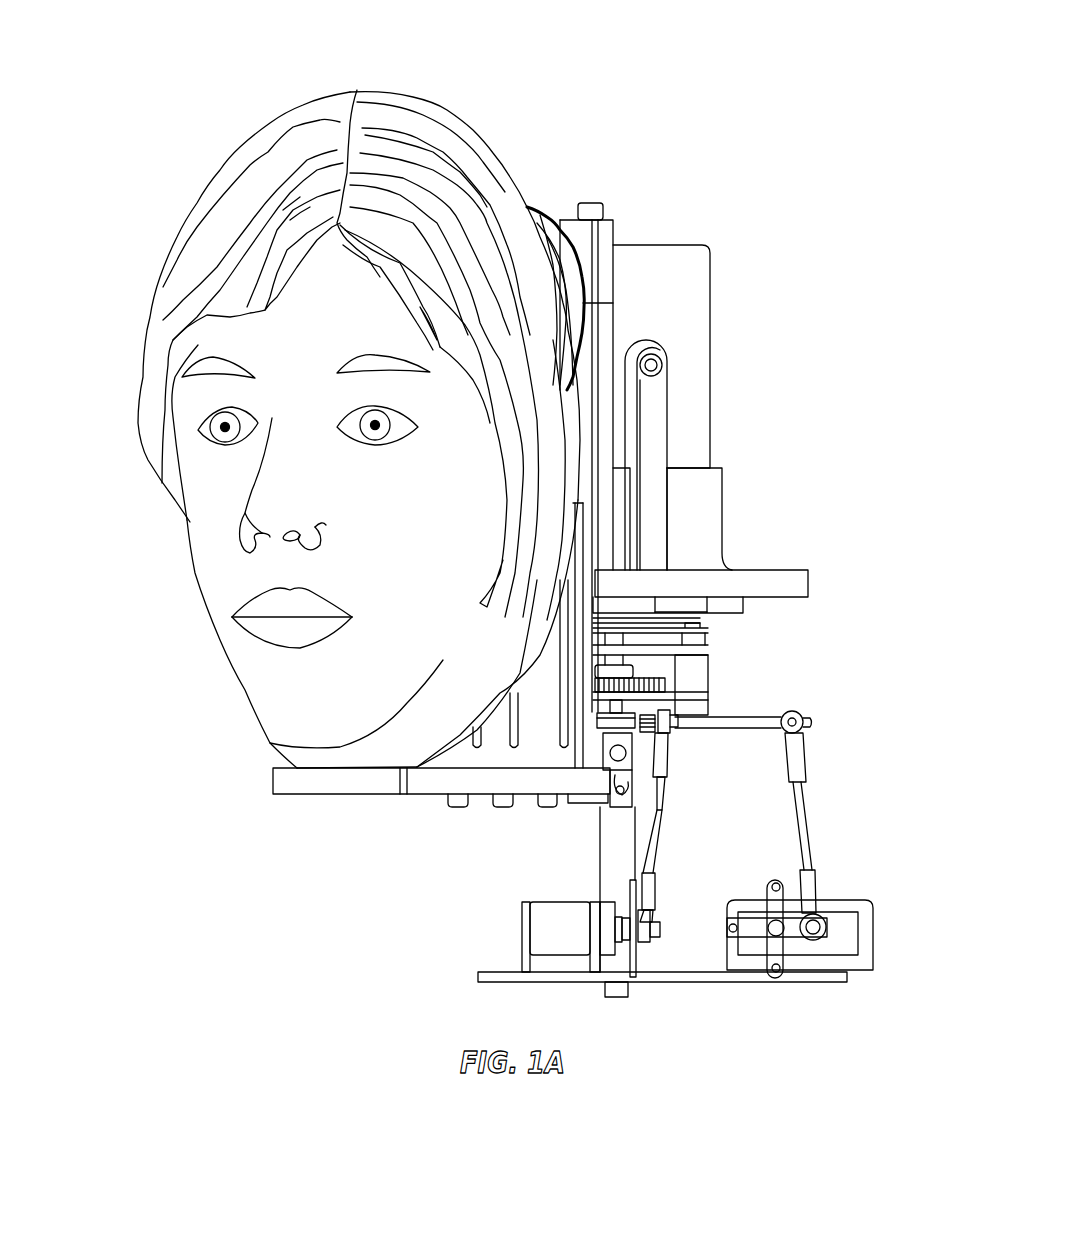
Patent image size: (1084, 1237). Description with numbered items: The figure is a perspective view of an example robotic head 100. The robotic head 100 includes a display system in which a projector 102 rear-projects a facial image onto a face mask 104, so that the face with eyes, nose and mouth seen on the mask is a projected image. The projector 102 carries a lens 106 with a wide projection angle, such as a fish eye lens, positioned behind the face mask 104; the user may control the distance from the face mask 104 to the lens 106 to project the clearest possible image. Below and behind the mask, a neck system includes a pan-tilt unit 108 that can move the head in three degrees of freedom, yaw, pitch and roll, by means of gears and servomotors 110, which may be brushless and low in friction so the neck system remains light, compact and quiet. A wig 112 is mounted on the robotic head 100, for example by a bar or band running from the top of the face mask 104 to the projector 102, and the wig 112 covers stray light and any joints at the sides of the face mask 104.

The robotic head 100 is at (829, 56).
The projector 102 is at (670, 272).
The face mask 104 is at (205, 520).
The lens 106 is at (548, 216).
The pan-tilt unit 108 is at (815, 835).
The servomotors 110 is at (565, 918).
The wig 112 is at (225, 248).